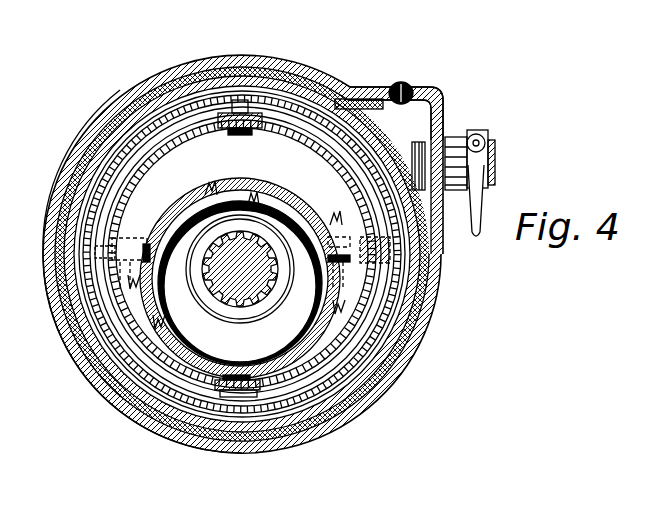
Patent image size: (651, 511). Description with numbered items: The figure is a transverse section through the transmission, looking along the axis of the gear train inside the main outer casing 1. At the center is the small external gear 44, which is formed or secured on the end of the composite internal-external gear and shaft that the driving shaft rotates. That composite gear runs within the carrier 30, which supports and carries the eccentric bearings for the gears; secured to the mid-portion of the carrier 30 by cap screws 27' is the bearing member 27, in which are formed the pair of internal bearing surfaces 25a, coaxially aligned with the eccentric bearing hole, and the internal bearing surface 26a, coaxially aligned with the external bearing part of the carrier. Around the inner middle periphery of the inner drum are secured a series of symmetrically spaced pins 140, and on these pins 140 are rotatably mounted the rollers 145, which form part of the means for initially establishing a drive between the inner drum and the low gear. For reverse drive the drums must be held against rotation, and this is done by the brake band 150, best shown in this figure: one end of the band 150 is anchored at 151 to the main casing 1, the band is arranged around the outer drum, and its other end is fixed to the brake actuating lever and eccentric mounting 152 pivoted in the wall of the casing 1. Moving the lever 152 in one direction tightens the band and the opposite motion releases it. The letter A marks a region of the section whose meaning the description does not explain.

The main outer casing 1 is at (287, 63).
The bearing member 27 is at (142, 353).
The cap screws 27' is at (64, 217).
The internal bearing surface 26a is at (357, 400).
The rollers 145 is at (263, 393).
The carrier 30 is at (168, 195).
The brake ring region A is at (333, 305).
The internal bearing surfaces 25a is at (213, 320).
The small external gear 44 is at (250, 302).
The pins 140 is at (245, 137).
The brake band 150 is at (355, 88).
The anchor 151 is at (410, 86).
The brake actuating lever and eccentric mounting 152 is at (457, 136).